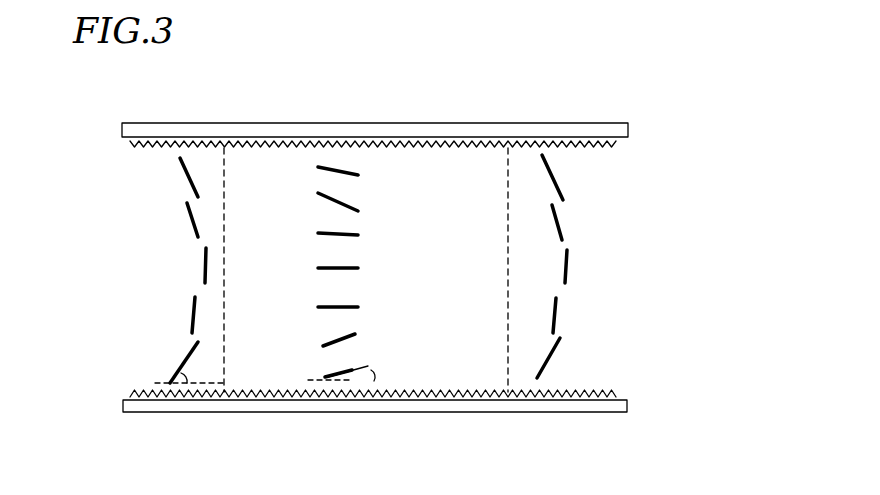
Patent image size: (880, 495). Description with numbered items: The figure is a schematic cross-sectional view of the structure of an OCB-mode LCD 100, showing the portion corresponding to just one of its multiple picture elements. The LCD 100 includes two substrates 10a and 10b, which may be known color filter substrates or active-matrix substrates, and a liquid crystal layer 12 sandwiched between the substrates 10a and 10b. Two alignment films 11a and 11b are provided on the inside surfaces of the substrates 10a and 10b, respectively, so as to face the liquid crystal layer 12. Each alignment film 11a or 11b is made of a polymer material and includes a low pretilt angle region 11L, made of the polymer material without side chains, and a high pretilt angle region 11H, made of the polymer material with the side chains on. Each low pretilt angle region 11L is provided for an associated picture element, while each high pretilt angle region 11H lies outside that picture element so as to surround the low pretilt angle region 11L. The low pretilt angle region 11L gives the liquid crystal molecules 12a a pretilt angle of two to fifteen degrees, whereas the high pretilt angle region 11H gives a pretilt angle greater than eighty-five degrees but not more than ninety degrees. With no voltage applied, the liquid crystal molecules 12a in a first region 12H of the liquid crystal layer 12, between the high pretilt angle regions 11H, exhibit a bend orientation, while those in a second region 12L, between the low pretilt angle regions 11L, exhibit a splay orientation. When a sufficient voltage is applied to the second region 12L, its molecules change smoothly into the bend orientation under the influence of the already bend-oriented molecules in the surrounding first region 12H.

The OCB-mode LCD 100 is at (677, 62).
The substrate 10a is at (630, 128).
The substrate 10b is at (627, 406).
The alignment film 11a is at (620, 147).
The alignment film 11b is at (613, 392).
The high pretilt angle region 11H is at (182, 142).
The low pretilt angle region 11L is at (369, 142).
The liquid crystal layer 12 is at (657, 283).
The first region 12H is at (133, 282).
The second region 12L is at (412, 288).
The liquid crystal molecules 12a is at (558, 342).